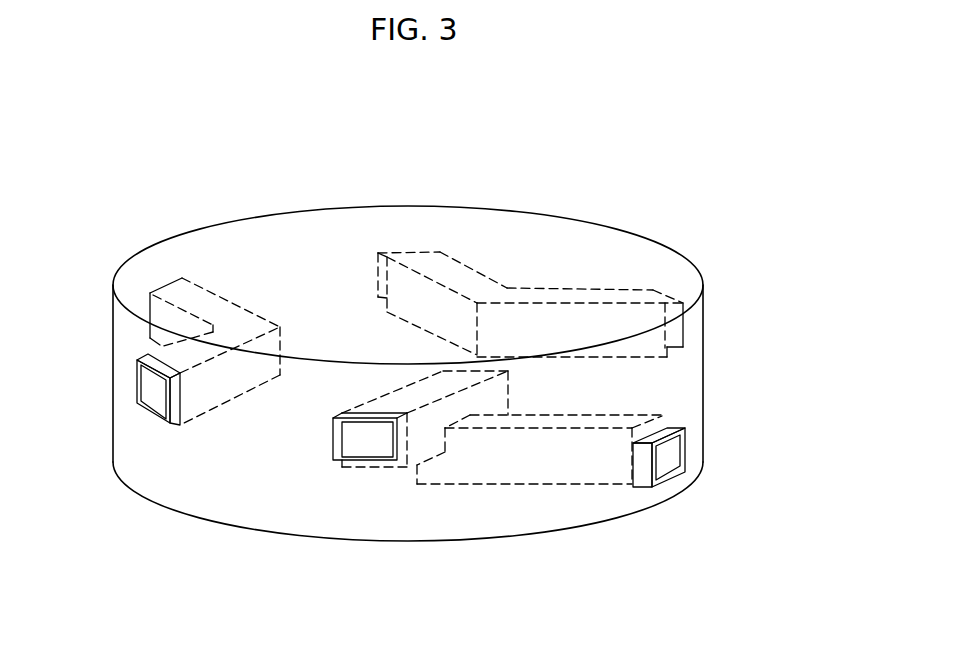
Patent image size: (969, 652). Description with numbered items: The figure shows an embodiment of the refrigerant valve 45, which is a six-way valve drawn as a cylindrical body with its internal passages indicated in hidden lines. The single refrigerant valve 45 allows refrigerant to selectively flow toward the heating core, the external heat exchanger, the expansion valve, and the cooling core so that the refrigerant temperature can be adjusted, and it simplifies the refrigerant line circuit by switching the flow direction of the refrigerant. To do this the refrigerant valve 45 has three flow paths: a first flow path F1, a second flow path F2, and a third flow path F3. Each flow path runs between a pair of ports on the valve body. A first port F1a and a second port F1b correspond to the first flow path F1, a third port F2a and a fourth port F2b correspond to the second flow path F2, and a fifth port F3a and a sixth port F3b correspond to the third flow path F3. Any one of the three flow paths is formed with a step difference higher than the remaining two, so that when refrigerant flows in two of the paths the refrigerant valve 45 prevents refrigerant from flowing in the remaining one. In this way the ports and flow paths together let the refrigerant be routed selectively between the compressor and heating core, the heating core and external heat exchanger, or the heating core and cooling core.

The refrigerant valve 45 is at (383, 192).
The first flow path F1 is at (151, 311).
The first port F1a is at (158, 287).
The second port F1b is at (163, 400).
The second flow path F2 is at (597, 239).
The third port F2a is at (410, 252).
The fourth port F2b is at (685, 323).
The third flow path F3 is at (540, 495).
The fifth port F3a is at (368, 452).
The sixth port F3b is at (657, 467).